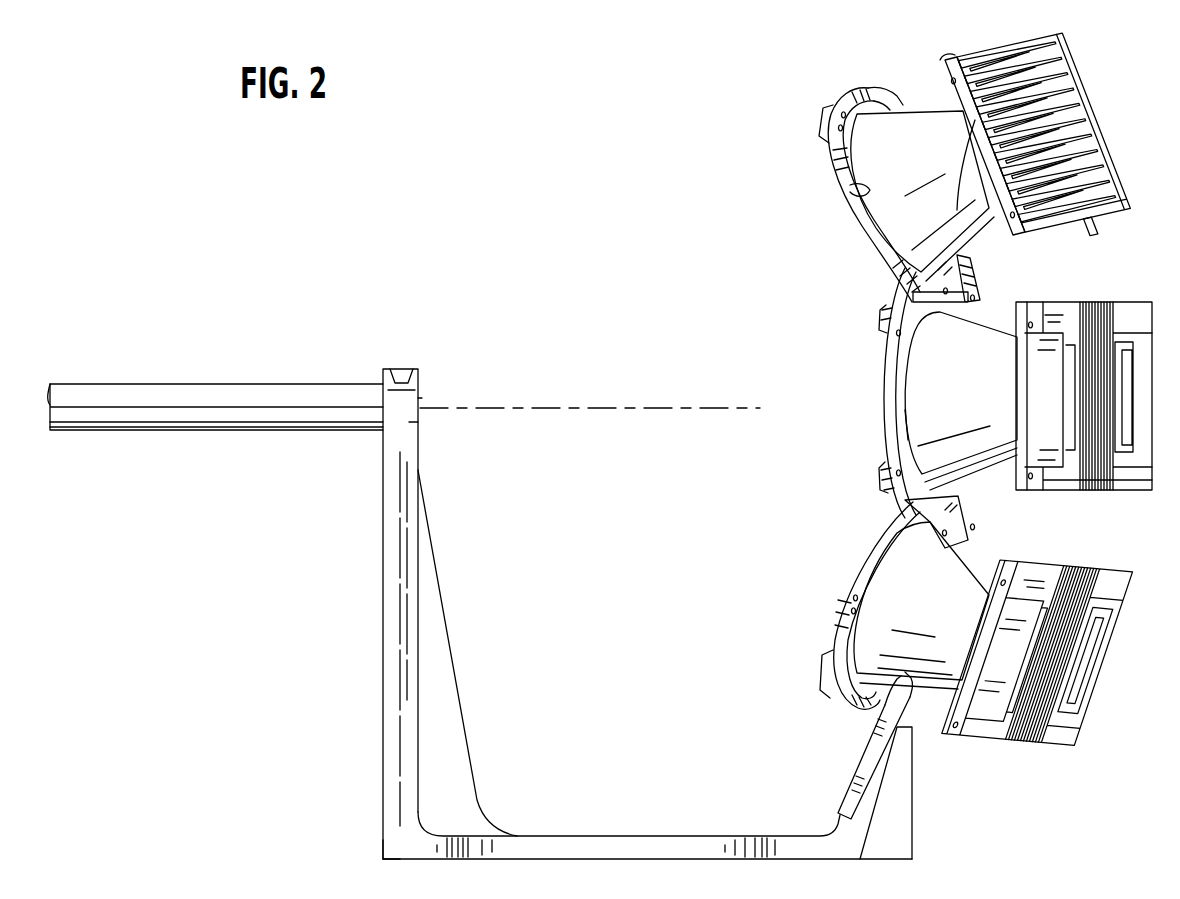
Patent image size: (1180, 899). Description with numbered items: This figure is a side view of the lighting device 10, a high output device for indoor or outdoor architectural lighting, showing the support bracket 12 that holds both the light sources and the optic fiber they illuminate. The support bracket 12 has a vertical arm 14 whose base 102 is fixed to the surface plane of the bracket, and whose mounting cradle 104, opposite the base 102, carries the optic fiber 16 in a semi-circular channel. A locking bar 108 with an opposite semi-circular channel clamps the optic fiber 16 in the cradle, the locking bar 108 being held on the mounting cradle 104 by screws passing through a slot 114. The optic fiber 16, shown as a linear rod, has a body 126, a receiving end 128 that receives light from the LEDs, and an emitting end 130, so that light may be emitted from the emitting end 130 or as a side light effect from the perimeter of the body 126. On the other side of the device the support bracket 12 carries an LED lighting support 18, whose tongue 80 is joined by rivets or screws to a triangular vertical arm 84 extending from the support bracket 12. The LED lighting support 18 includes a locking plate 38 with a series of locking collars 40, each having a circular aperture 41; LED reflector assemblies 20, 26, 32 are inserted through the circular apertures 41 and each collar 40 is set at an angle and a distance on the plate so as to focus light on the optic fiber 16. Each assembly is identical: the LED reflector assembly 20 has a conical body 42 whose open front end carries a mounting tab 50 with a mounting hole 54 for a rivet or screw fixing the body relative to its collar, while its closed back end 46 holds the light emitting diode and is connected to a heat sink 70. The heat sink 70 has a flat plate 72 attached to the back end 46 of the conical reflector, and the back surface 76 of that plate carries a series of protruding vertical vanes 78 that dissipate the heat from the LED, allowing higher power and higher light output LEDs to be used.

The lighting device 10 is at (757, 253).
The support bracket 12 is at (635, 850).
The vertical arm 14 is at (385, 690).
The optic fiber 16 is at (165, 385).
The LED lighting support 18 is at (892, 508).
The LED reflector assembly 20 is at (925, 125).
The LED reflector assembly 26 is at (990, 430).
The LED reflector assembly 32 is at (930, 660).
The locking plate 38 is at (880, 382).
The locking collar 40 is at (860, 240).
The circular aperture 41 is at (850, 188).
The conical body 42 is at (975, 68).
The closed back end 46 is at (990, 210).
The mounting tab 50 is at (820, 128).
The mounting hole 54 is at (845, 100).
The heat sink 70 is at (1047, 154).
The flat plate 72 is at (940, 62).
The back surface 76 is at (1091, 226).
The vertical vanes 78 is at (1037, 130).
The tongue 80 is at (836, 800).
The triangular vertical arm 84 is at (905, 822).
The base 102 is at (392, 848).
The mounting cradle 104 is at (410, 422).
The locking bar 108 is at (420, 385).
The slot 114 is at (400, 370).
The body 126 is at (213, 430).
The receiving end 128 is at (420, 400).
The emitting end 130 is at (50, 386).